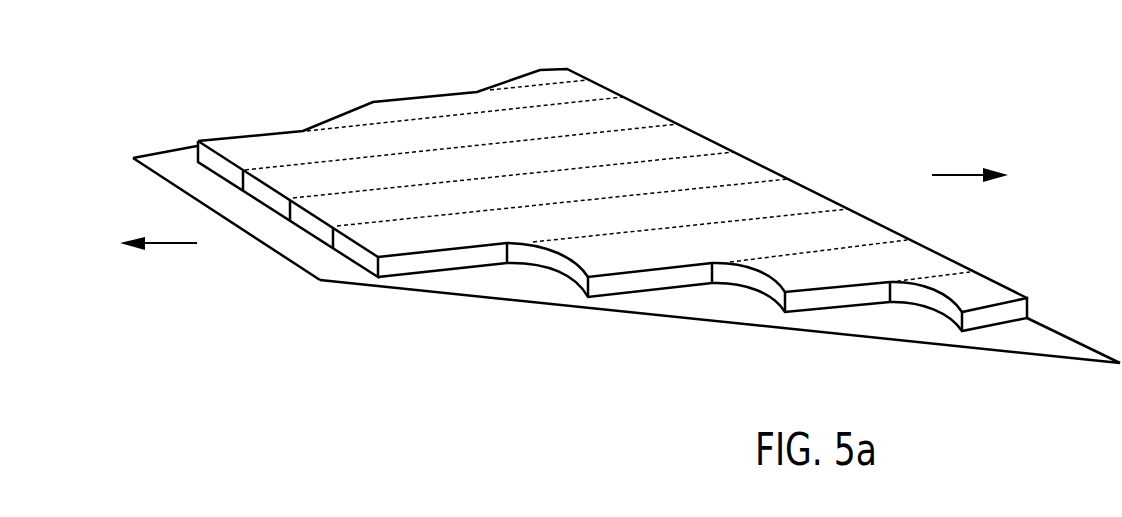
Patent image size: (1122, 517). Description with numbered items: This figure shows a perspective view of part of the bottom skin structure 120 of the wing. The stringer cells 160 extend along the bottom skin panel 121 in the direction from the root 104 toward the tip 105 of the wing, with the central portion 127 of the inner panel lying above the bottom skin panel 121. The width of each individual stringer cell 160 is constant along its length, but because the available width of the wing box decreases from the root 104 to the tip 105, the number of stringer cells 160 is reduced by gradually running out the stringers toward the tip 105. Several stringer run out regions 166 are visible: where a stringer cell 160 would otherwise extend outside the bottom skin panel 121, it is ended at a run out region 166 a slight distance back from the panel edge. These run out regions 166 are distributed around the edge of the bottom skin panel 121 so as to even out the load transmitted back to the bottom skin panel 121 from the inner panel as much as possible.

The root 104 is at (992, 175).
The tip 105 is at (136, 244).
The bottom skin structure 120 is at (626, 254).
The bottom skin panel 121 is at (470, 282).
The central portion of inner panel 127 is at (677, 145).
The stringer cells 160 is at (273, 199).
The stringer run out regions 166 is at (900, 318).